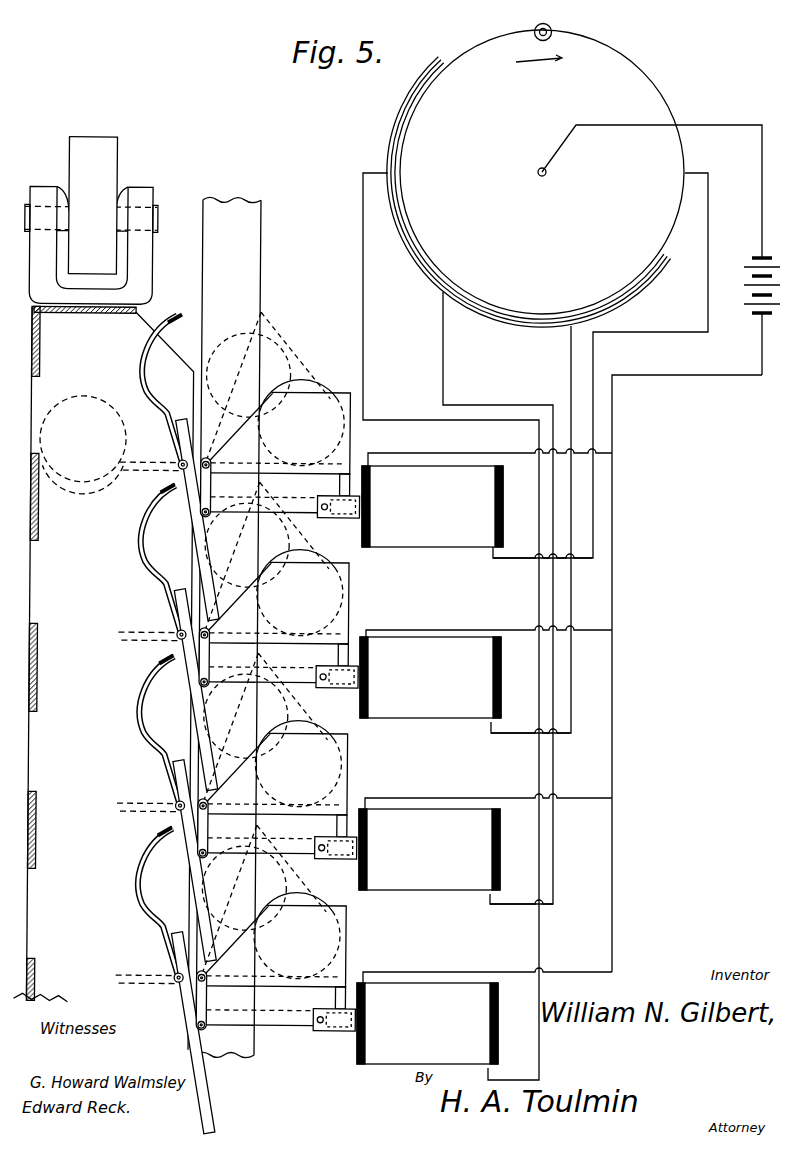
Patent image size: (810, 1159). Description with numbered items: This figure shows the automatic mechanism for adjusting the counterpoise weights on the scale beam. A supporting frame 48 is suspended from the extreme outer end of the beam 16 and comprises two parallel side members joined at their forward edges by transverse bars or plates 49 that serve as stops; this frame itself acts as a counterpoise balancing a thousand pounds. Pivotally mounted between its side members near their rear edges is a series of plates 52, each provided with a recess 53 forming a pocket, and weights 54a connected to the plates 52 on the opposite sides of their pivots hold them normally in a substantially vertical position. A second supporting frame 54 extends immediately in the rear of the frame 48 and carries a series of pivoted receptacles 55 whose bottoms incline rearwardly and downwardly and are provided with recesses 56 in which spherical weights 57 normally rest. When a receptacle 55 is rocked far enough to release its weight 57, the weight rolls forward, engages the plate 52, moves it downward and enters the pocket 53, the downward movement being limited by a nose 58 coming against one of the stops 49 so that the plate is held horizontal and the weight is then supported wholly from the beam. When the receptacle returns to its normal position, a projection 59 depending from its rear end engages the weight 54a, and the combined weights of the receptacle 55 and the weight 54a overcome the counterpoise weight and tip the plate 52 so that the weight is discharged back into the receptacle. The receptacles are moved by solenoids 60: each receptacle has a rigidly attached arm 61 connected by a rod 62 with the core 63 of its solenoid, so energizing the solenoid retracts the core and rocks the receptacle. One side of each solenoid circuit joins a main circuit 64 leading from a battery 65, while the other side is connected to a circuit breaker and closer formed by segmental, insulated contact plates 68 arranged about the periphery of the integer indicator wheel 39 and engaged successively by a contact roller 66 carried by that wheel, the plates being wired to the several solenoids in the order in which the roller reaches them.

The beam 16 is at (95, 152).
The integer indicator wheel 39 is at (482, 60).
The supporting frame 48 is at (176, 1000).
The transverse bars or plates 49 is at (42, 536).
The plates 52 is at (180, 462).
The recesses 53 is at (157, 386).
The supporting frame 54 is at (262, 212).
The weights 54a is at (217, 588).
The receptacles 55 is at (241, 428).
The recesses 56 is at (261, 744).
The weight 57 is at (305, 380).
The nose 58 is at (178, 314).
The projection 59 is at (275, 700).
The solenoids 60 is at (473, 540).
The arm 61 is at (214, 493).
The rod 62 is at (292, 513).
The core 63 is at (350, 518).
The main circuit 64 is at (615, 525).
The battery 65 is at (754, 314).
The contact roller 66 is at (536, 38).
The contact plates 68 is at (404, 236).